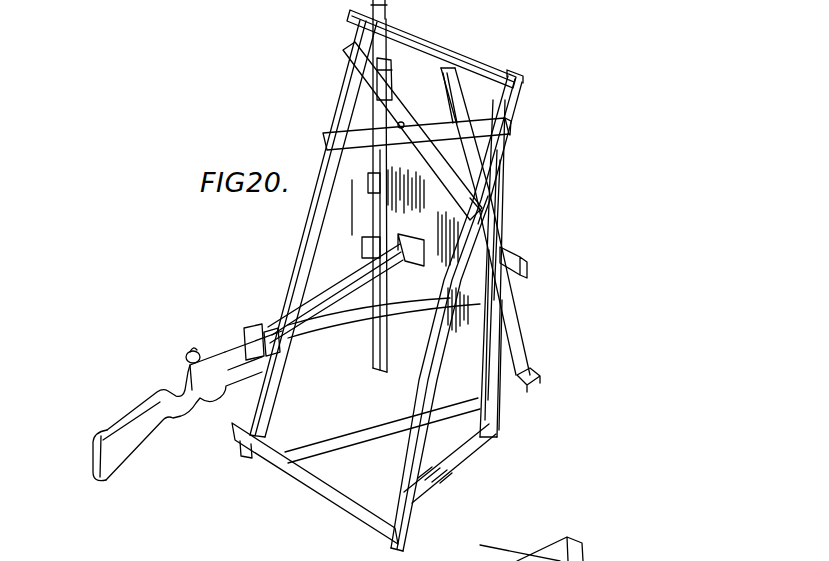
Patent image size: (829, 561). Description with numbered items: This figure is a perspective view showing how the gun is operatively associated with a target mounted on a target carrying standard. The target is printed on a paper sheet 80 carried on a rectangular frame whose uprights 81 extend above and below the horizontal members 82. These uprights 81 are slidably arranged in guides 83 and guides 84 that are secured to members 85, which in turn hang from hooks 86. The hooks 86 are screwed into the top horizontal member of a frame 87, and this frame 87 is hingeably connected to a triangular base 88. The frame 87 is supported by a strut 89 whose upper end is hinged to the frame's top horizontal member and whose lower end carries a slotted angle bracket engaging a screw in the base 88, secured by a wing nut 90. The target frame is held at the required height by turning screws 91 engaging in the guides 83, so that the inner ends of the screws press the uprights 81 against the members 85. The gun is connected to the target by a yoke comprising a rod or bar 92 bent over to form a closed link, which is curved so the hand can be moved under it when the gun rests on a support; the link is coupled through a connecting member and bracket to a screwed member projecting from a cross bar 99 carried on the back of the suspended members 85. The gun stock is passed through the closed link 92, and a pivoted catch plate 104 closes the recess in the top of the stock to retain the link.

The paper sheet 80 is at (483, 220).
The uprights 81 is at (497, 136).
The horizontal members 82 is at (377, 150).
The guides 83 is at (503, 170).
The guides 84 is at (363, 270).
The members 85 is at (498, 293).
The hooks 86 is at (380, 43).
The frame 87 is at (520, 98).
The triangular base 88 is at (455, 445).
The strut 89 is at (512, 353).
The wing nut 90 is at (537, 377).
The screws 91 is at (402, 123).
The rod or bar 92 is at (420, 320).
The cross bar 99 is at (503, 270).
The plate 104 is at (253, 335).